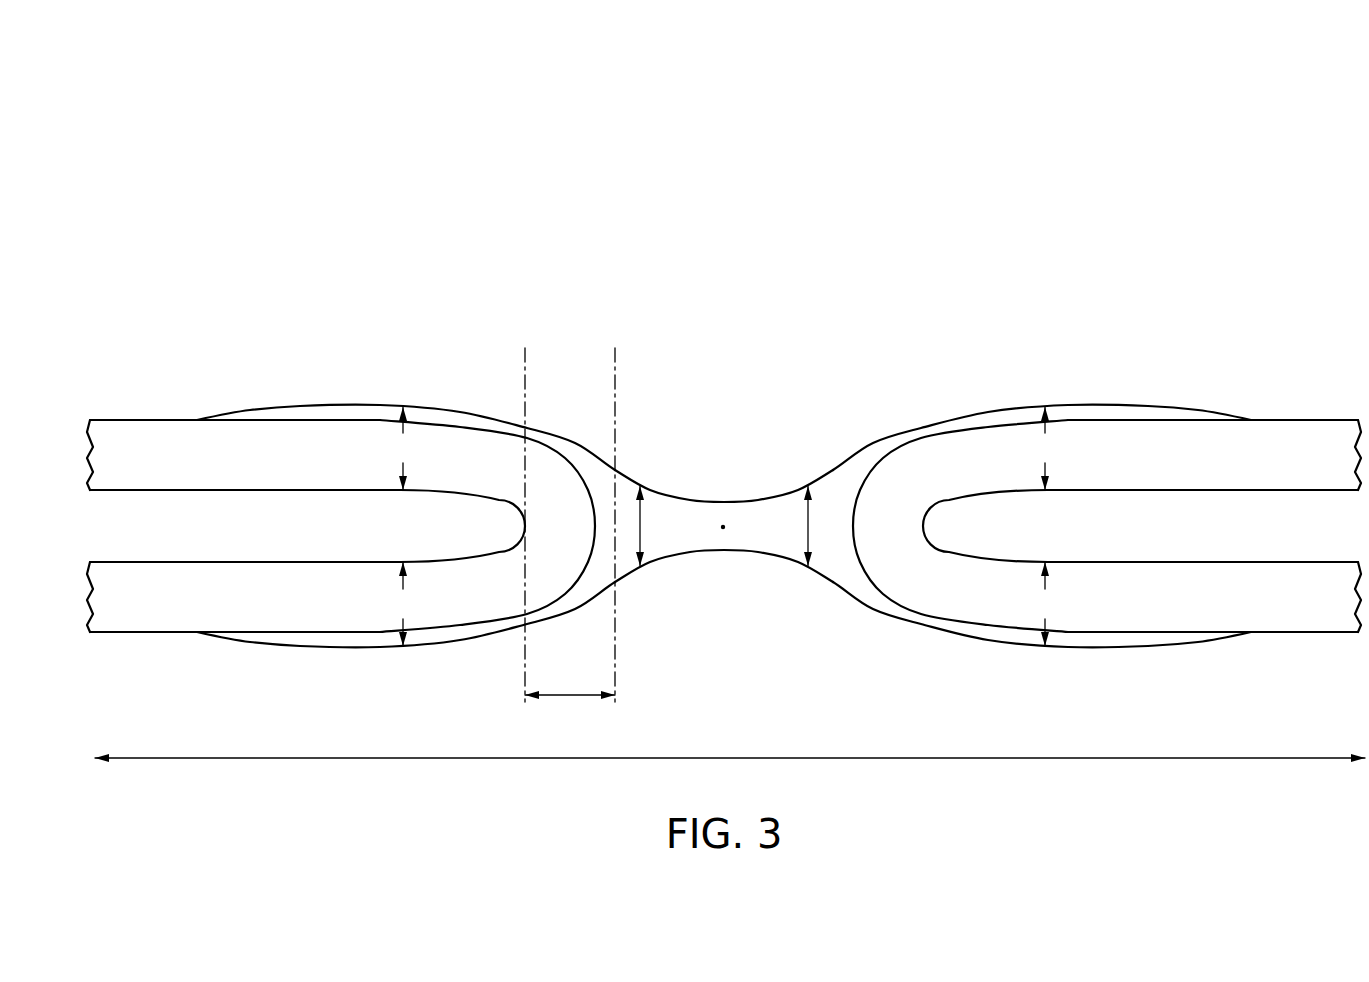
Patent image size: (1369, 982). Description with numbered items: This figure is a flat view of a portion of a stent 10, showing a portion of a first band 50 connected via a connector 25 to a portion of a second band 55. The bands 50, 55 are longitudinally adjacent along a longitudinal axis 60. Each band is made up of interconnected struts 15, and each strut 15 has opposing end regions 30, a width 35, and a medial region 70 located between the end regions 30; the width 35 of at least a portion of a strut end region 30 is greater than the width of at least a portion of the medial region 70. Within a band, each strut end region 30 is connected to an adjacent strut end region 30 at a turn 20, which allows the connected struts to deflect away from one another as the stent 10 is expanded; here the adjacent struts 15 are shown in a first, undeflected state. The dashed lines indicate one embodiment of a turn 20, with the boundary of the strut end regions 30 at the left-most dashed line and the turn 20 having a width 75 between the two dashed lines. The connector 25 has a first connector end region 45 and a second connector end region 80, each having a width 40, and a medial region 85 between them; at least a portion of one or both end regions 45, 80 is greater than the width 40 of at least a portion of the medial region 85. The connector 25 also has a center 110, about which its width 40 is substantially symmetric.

The stent 10 is at (766, 250).
The strut 15 is at (210, 448).
The turn 20 is at (560, 540).
The connector 25 is at (700, 537).
The strut end region 30 is at (472, 462).
The width 35 is at (723, 526).
The width 40 is at (642, 528).
The first connector end region 45 is at (628, 500).
The first band 50 is at (340, 340).
The second band 55 is at (1106, 338).
The longitudinal axis 60 is at (965, 760).
The medial region 70 is at (109, 448).
The width 75 is at (570, 702).
The second connector end region 80 is at (827, 508).
The medial region 85 is at (723, 538).
The center 110 is at (723, 524).